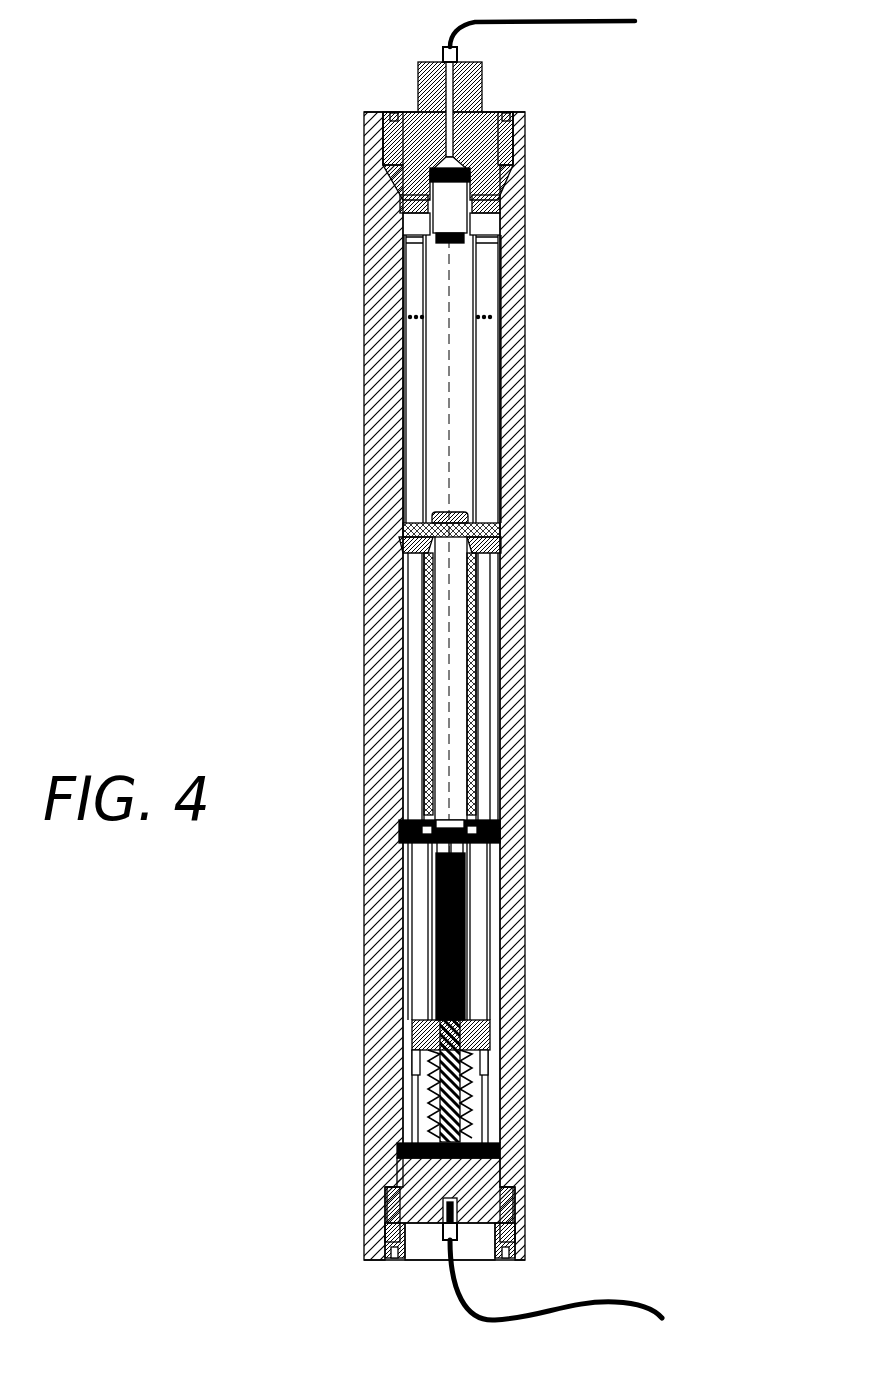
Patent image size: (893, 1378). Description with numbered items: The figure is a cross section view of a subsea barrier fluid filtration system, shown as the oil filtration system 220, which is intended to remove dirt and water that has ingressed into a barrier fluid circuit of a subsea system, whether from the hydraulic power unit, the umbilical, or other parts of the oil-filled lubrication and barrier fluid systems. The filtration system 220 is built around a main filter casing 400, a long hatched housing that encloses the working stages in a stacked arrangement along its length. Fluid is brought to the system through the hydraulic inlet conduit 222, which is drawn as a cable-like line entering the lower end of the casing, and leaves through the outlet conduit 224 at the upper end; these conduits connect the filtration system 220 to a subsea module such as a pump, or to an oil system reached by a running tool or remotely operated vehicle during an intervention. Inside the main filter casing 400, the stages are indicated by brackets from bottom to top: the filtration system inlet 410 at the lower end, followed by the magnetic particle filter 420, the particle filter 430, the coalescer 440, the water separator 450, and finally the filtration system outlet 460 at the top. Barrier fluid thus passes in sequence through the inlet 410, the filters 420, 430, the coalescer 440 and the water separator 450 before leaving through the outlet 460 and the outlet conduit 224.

The oil filtration system 220 is at (250, 148).
The main filter casing 400 is at (378, 513).
The outlet conduit 224 is at (582, 21).
The hydraulic inlet conduit 222 is at (627, 1302).
The filtration system outlet 460 is at (559, 68).
The water separator 450 is at (559, 215).
The coalescer 440 is at (559, 540).
The particle filter 430 is at (559, 830).
The magnetic particle filter 420 is at (559, 1027).
The filtration system inlet 410 is at (559, 1140).